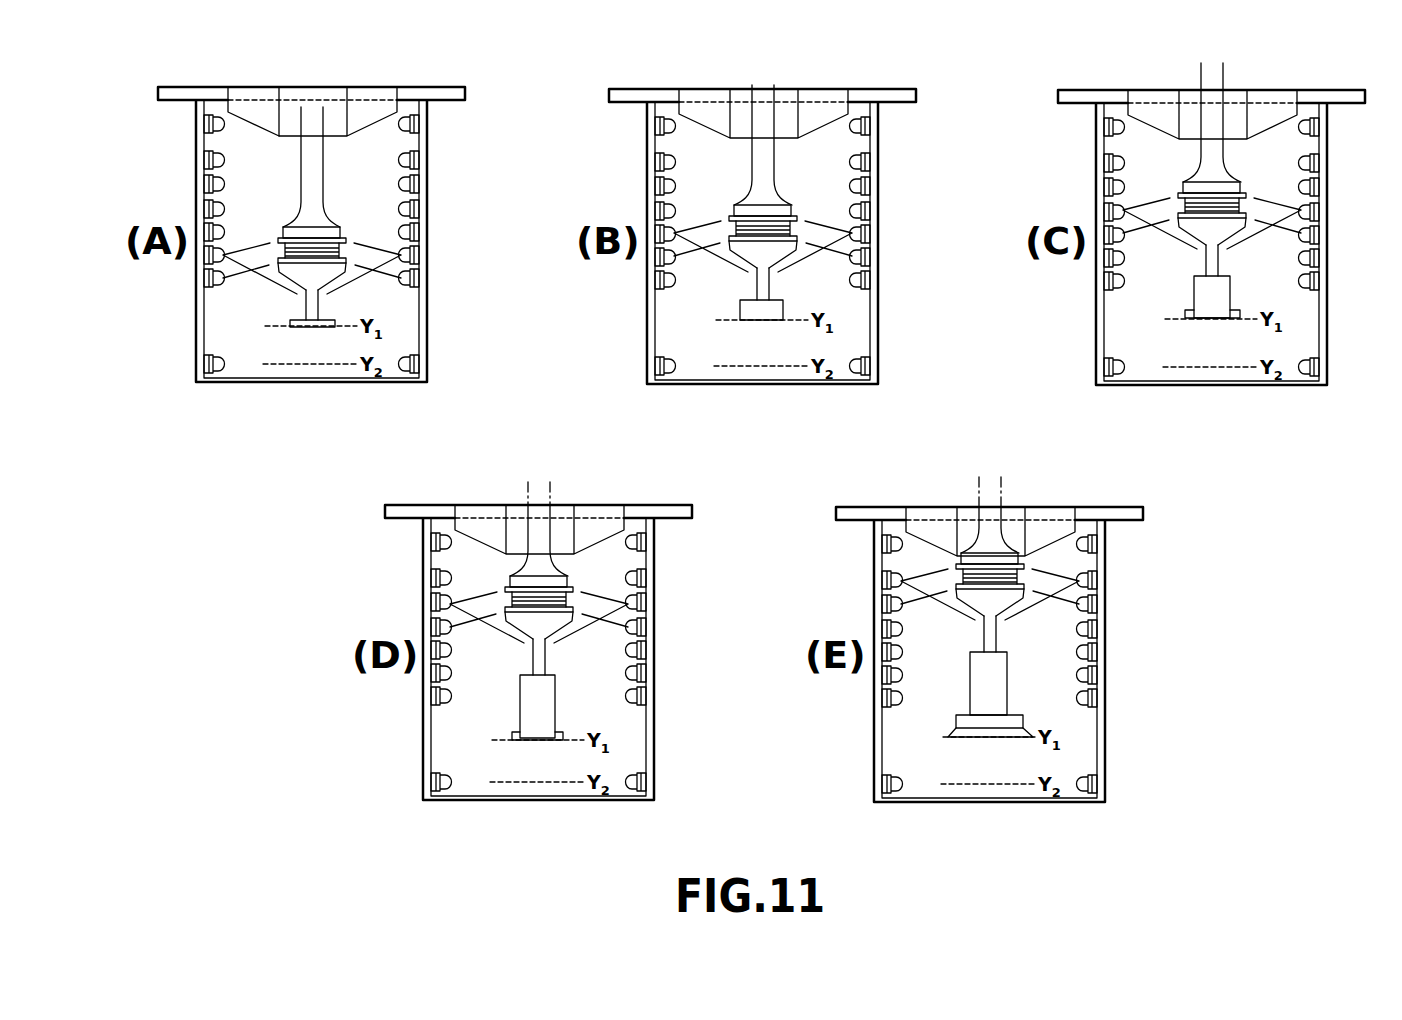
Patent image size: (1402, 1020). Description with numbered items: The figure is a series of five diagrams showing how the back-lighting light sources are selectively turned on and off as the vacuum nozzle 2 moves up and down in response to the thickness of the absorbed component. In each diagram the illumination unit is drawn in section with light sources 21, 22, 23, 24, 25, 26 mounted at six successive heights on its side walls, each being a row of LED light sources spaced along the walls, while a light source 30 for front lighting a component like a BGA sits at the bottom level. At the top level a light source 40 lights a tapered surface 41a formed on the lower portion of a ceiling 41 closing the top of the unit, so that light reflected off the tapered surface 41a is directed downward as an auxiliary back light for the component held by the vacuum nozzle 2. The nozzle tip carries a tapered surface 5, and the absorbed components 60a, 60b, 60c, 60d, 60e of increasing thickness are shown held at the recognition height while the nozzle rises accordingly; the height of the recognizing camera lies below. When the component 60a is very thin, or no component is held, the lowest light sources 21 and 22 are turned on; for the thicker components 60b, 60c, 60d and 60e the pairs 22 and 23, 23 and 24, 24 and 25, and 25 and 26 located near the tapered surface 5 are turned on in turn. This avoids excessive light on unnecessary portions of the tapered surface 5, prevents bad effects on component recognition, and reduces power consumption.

The vacuum nozzle 2 is at (319, 168).
The tapered surface 5 is at (288, 278).
The light source 21 is at (427, 278).
The light source 22 is at (427, 255).
The light source 23 is at (427, 232).
The light source 24 is at (427, 209).
The light source 25 is at (427, 184).
The light source 26 is at (427, 160).
The light source 30 is at (427, 364).
The light source 40 is at (427, 124).
The ceiling 41 is at (363, 115).
The tapered surface 41a is at (245, 113).
The absorbed component 60a is at (308, 328).
The absorbed component 60b is at (762, 322).
The absorbed component 60c is at (1210, 322).
The absorbed component 60d is at (537, 742).
The absorbed component 60e is at (987, 739).